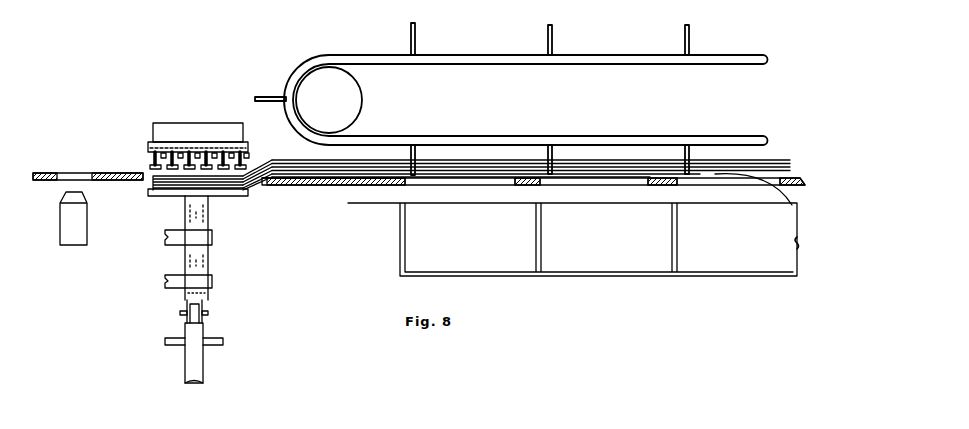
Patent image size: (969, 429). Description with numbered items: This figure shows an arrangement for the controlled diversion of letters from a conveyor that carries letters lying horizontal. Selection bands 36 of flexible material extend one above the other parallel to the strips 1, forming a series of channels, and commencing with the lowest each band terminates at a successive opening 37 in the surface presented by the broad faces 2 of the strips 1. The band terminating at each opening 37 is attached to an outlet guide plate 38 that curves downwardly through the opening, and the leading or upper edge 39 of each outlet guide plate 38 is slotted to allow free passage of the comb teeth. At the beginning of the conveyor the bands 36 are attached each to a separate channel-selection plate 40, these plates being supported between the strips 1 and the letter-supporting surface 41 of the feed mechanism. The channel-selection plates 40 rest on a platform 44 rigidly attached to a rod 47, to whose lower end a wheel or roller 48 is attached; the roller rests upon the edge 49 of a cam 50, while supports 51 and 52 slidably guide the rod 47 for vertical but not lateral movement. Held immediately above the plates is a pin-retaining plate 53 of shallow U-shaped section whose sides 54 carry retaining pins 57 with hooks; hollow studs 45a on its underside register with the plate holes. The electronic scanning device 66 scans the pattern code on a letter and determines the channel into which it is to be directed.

The strips 1 is at (296, 186).
The broad faces 2 is at (311, 174).
The selection bands 36 is at (360, 171).
The openings 37 is at (738, 185).
The outlet guide plate 38 is at (505, 178).
The leading or upper edge 39 is at (528, 185).
The channel-selection plates 40 is at (168, 194).
The letter-supporting surface 41 is at (80, 173).
The platform 44 is at (150, 190).
The hollow studs 45a is at (250, 156).
The rod 47 is at (206, 216).
The wheel or roller 48 is at (187, 305).
The edge of cam 49 is at (200, 388).
The cam 50 is at (203, 335).
The support 51 is at (165, 237).
The support 52 is at (165, 280).
The pin-retaining plate 53 is at (152, 123).
The sides 54 is at (148, 147).
The retaining pins 57 is at (152, 166).
The electronic scanning device 66 is at (60, 222).